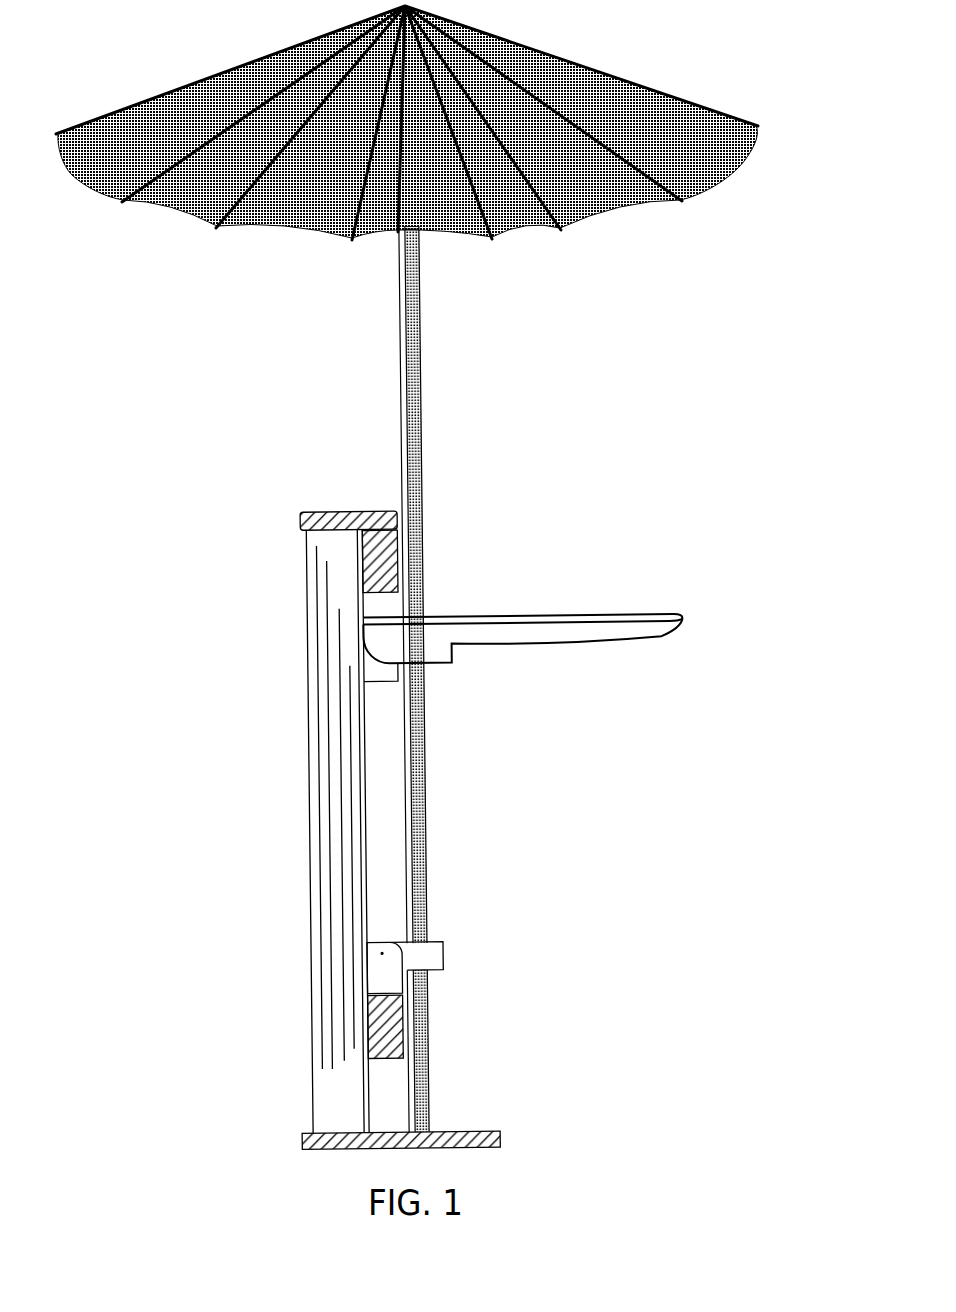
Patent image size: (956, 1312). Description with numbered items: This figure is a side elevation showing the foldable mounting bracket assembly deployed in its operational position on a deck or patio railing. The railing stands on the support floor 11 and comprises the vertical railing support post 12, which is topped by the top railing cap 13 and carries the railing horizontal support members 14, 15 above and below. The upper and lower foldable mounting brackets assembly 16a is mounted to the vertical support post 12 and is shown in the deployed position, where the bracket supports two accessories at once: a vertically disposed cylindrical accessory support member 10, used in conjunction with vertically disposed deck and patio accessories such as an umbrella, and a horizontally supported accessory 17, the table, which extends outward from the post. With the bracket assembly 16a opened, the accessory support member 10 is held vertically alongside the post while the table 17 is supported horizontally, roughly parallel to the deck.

The vertically disposed accessory support member 10 is at (430, 770).
The support floor 11 is at (300, 1133).
The vertical railing support post 12 is at (287, 667).
The top railing cap 13 is at (293, 503).
The railing horizontal support member 14 is at (385, 553).
The railing horizontal support member 15 is at (387, 1033).
The foldable mounting bracket assembly in deployed position 16a is at (455, 953).
The horizontally supported accessory 17 is at (695, 630).